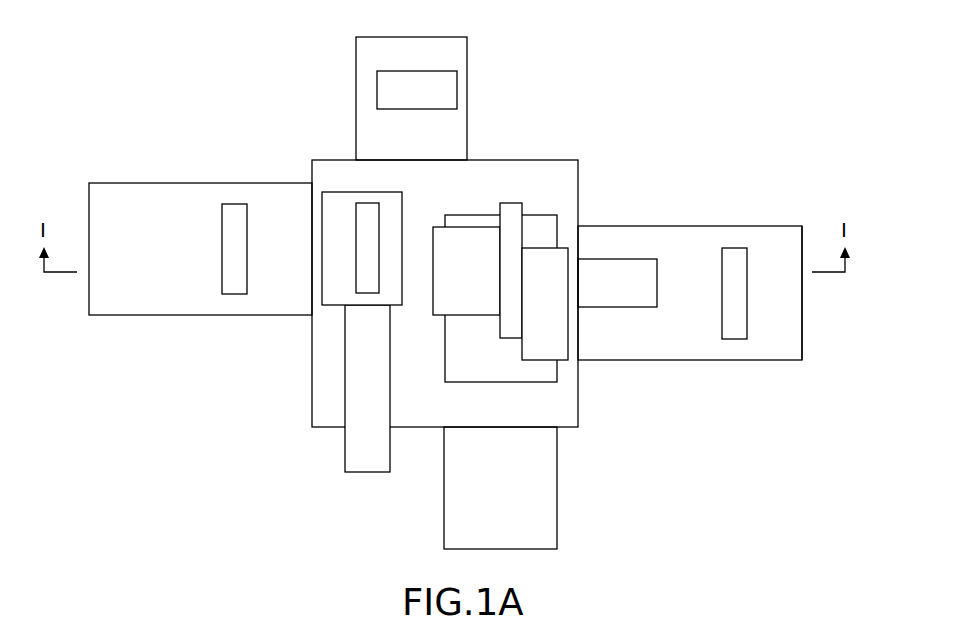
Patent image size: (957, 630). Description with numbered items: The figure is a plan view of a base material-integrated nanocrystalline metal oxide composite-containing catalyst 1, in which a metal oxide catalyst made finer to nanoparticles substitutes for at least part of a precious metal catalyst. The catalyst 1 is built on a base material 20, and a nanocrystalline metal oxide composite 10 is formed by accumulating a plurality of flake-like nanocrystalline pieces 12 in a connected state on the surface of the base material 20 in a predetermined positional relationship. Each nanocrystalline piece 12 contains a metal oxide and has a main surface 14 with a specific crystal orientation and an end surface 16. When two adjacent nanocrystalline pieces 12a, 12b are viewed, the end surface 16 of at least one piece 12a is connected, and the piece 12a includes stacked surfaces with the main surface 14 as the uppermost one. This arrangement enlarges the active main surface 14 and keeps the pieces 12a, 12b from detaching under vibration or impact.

The base material-integrated nanocrystalline metal oxide composite-containing cataly 1 is at (613, 118).
The nanocrystalline metal oxide composite 10 is at (509, 312).
The nanocrystalline piece 12 is at (140, 293).
The nanocrystalline piece 12a is at (552, 335).
The nanocrystalline piece 12b is at (510, 229).
The main surface 14 is at (677, 245).
The end surface 16 is at (802, 313).
The base material 20 is at (326, 352).